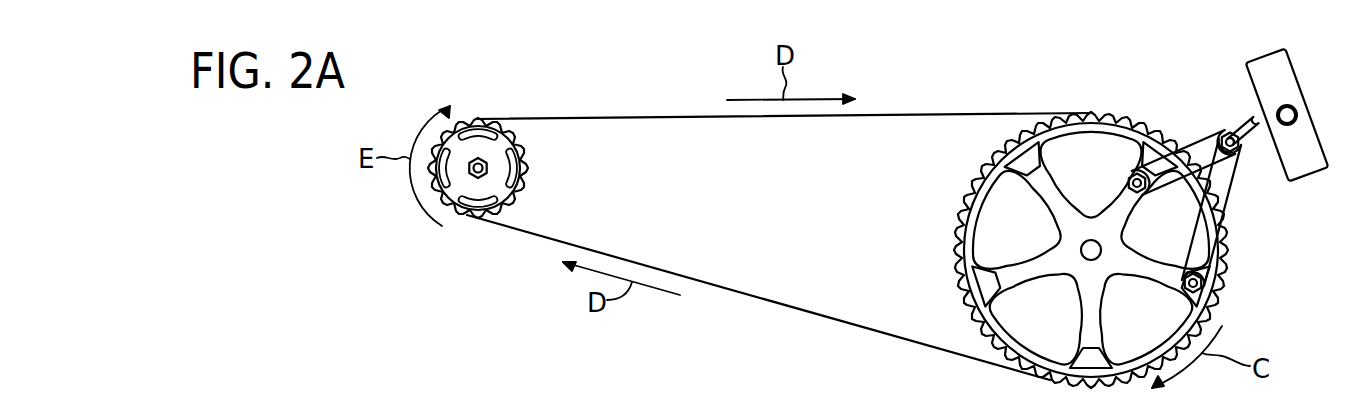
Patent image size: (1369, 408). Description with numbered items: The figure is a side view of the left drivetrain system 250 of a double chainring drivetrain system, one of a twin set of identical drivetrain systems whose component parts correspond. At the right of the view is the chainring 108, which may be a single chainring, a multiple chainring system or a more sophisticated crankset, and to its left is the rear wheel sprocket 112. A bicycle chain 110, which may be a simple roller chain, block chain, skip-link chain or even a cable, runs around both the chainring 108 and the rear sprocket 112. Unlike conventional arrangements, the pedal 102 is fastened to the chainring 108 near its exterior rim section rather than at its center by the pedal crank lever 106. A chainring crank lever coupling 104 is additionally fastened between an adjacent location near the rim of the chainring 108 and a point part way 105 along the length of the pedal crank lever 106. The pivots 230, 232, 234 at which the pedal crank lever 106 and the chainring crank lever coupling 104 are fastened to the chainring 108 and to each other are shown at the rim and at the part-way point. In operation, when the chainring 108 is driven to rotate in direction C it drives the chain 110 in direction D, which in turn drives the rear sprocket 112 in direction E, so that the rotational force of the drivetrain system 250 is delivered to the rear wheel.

The pedal 102 is at (1265, 55).
The chainring crank lever coupling 104 is at (1232, 203).
The part way along the length of pedal crank lever 105 is at (1254, 120).
The pedal crank lever 106 is at (1196, 142).
The chainring 108 is at (980, 175).
The bicycle chain 110 is at (638, 115).
The rear wheel sprocket 112 is at (529, 163).
The pivot pin 230 is at (1206, 283).
The pivot pin 232 is at (1128, 178).
The pivot pin 234 is at (1226, 132).
The drivetrain system 250 is at (807, 358).